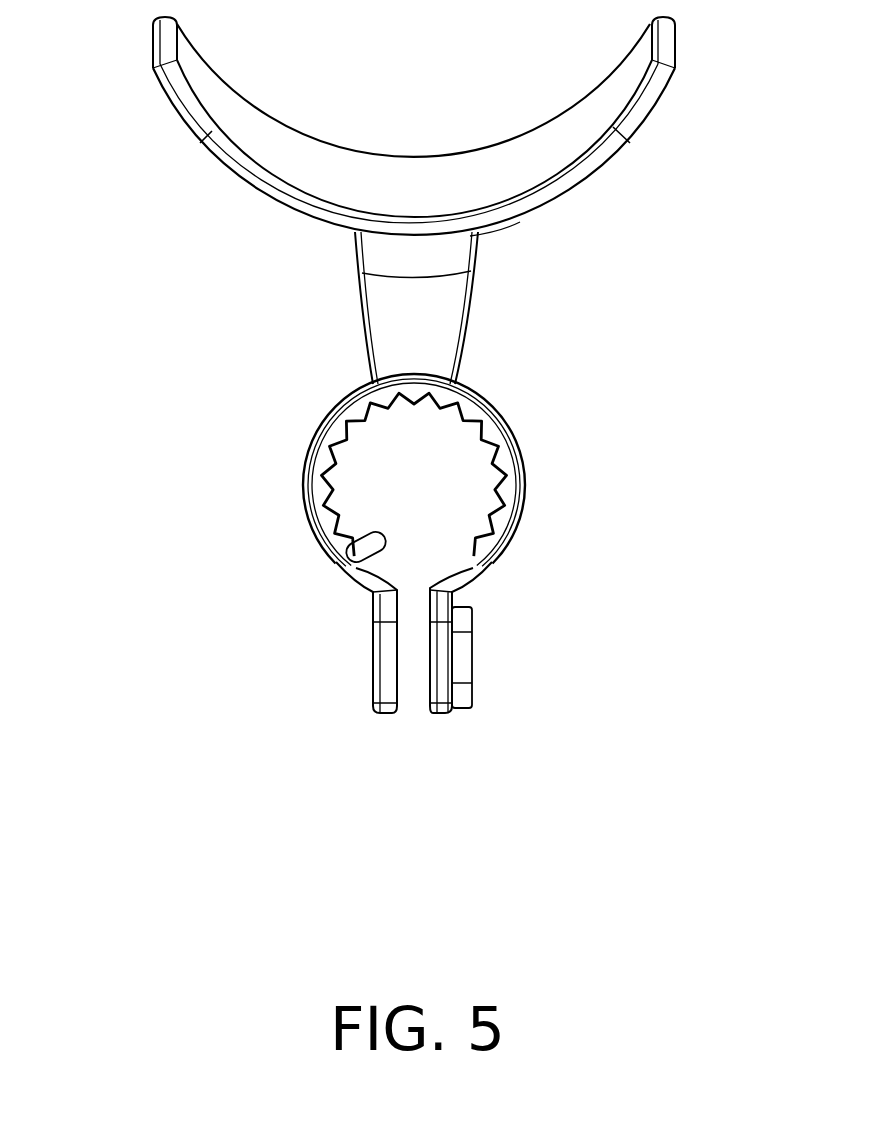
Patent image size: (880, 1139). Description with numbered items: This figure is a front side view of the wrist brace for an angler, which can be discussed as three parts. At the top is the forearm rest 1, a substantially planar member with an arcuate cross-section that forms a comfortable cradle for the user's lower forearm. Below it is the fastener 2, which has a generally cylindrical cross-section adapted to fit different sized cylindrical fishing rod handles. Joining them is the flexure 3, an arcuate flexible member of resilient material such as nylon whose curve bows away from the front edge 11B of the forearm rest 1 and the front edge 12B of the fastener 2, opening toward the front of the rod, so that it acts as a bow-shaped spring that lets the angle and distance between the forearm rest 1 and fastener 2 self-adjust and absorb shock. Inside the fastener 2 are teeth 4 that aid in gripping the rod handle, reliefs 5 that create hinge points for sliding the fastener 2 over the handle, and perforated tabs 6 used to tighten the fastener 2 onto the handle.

The forearm rest 1 is at (662, 158).
The front edge of forearm rest 11B is at (490, 236).
The flexure 3 is at (314, 266).
The fastener 2 is at (542, 558).
The front edge of fastener 12B is at (525, 455).
The reliefs 5 is at (362, 414).
The teeth 4 is at (345, 572).
The perforated tabs 6 is at (383, 722).